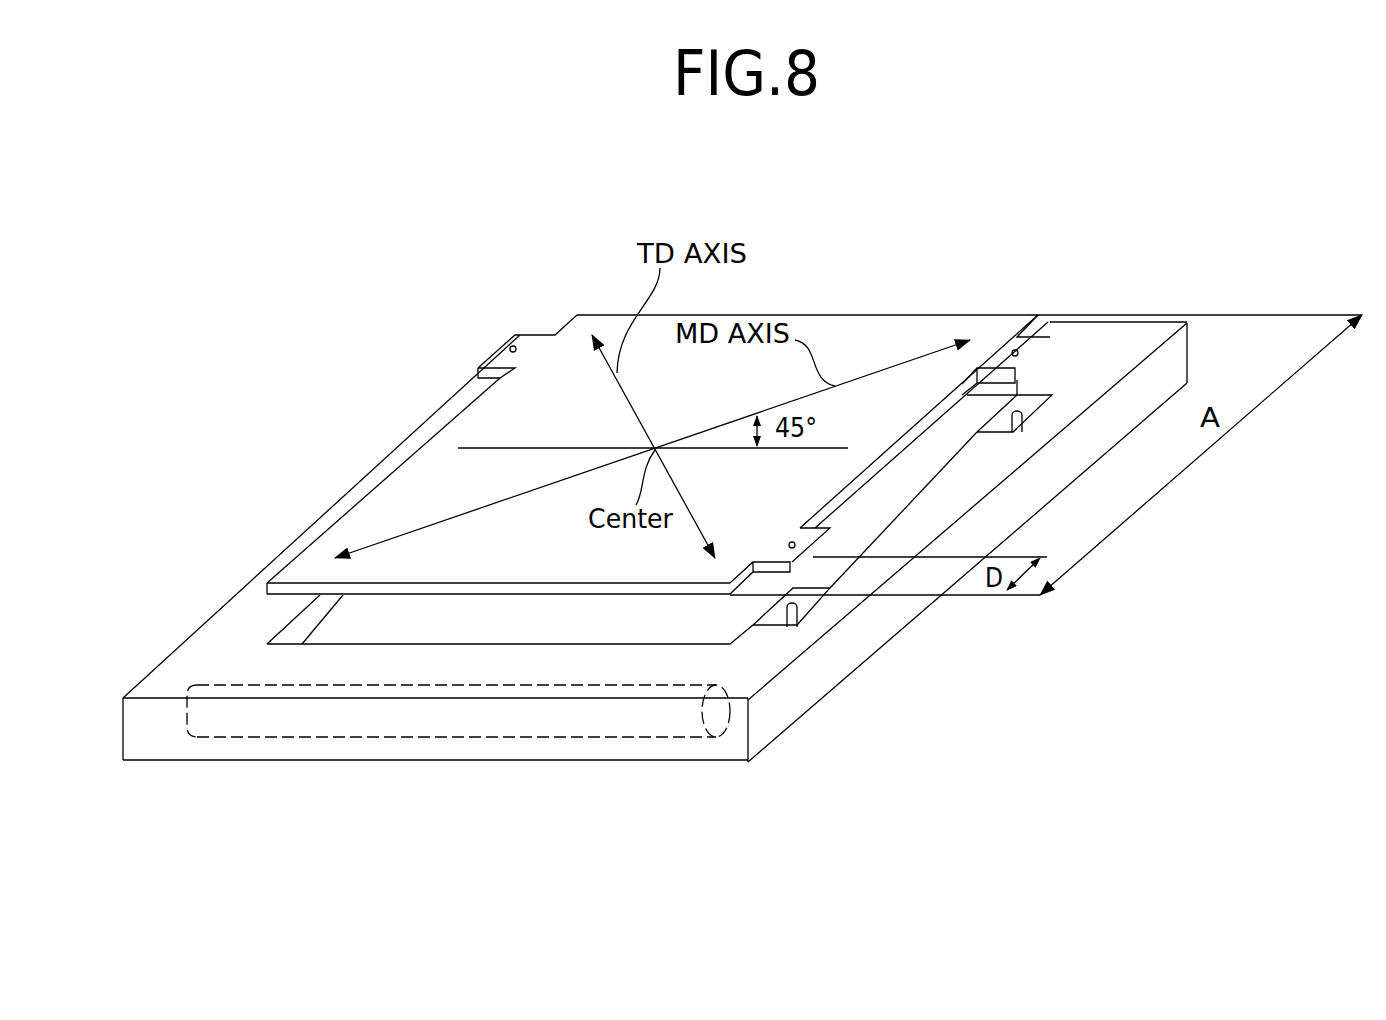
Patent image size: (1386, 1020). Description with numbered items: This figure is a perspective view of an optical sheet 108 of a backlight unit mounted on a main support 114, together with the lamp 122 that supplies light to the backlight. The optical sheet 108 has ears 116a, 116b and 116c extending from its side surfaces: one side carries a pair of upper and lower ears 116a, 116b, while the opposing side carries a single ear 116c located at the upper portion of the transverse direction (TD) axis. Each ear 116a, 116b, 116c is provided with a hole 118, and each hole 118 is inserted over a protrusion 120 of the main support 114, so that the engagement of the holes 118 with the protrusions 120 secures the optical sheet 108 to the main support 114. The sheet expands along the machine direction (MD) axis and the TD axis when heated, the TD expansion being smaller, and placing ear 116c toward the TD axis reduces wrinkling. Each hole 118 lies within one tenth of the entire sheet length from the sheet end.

The optical sheet 108 is at (577, 315).
The main support 114 is at (1187, 318).
The upper ear 116a is at (1053, 322).
The lower ear 116b is at (778, 575).
The ear 116c is at (472, 368).
The hole 118 is at (1018, 337).
The protrusion 120 is at (797, 612).
The lamp 122 is at (640, 738).